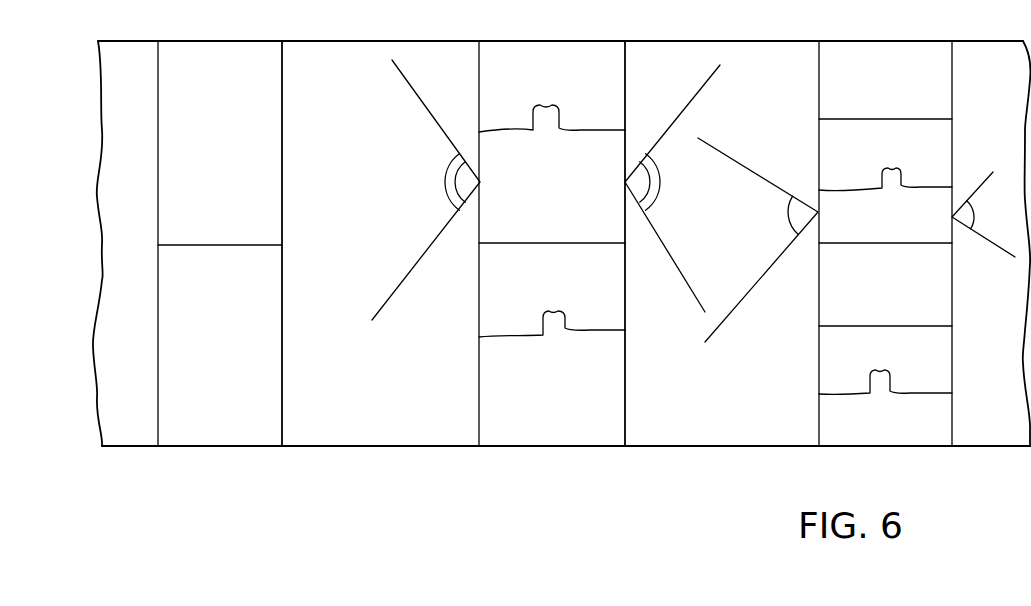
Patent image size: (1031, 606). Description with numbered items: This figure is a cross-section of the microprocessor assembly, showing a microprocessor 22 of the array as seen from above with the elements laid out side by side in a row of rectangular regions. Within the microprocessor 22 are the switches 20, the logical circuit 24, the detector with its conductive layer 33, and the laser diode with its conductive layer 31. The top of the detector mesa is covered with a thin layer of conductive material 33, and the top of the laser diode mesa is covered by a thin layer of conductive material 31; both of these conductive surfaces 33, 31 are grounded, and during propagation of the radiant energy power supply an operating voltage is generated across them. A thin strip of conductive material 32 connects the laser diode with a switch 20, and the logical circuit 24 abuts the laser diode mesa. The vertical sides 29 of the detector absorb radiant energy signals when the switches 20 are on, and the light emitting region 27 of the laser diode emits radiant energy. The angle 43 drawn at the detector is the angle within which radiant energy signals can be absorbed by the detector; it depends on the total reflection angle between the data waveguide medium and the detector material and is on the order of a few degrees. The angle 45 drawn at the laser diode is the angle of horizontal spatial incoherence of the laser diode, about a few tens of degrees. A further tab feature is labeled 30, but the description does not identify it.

The switch 20 is at (715, 226).
The microprocessor 22 is at (687, 457).
The logical circuit 24 is at (885, 197).
The light emitting region 27 is at (817, 214).
The vertical sides of the detector 29 is at (625, 218).
The tab 30 is at (553, 115).
The conductive layer on laser diode mesa 31 is at (885, 322).
The conductive strip 32 is at (898, 178).
The conductive layer on detector mesa 33 is at (552, 280).
The detector acceptance angle 43 is at (440, 185).
The horizontal spatial incoherence angle 45 is at (786, 218).